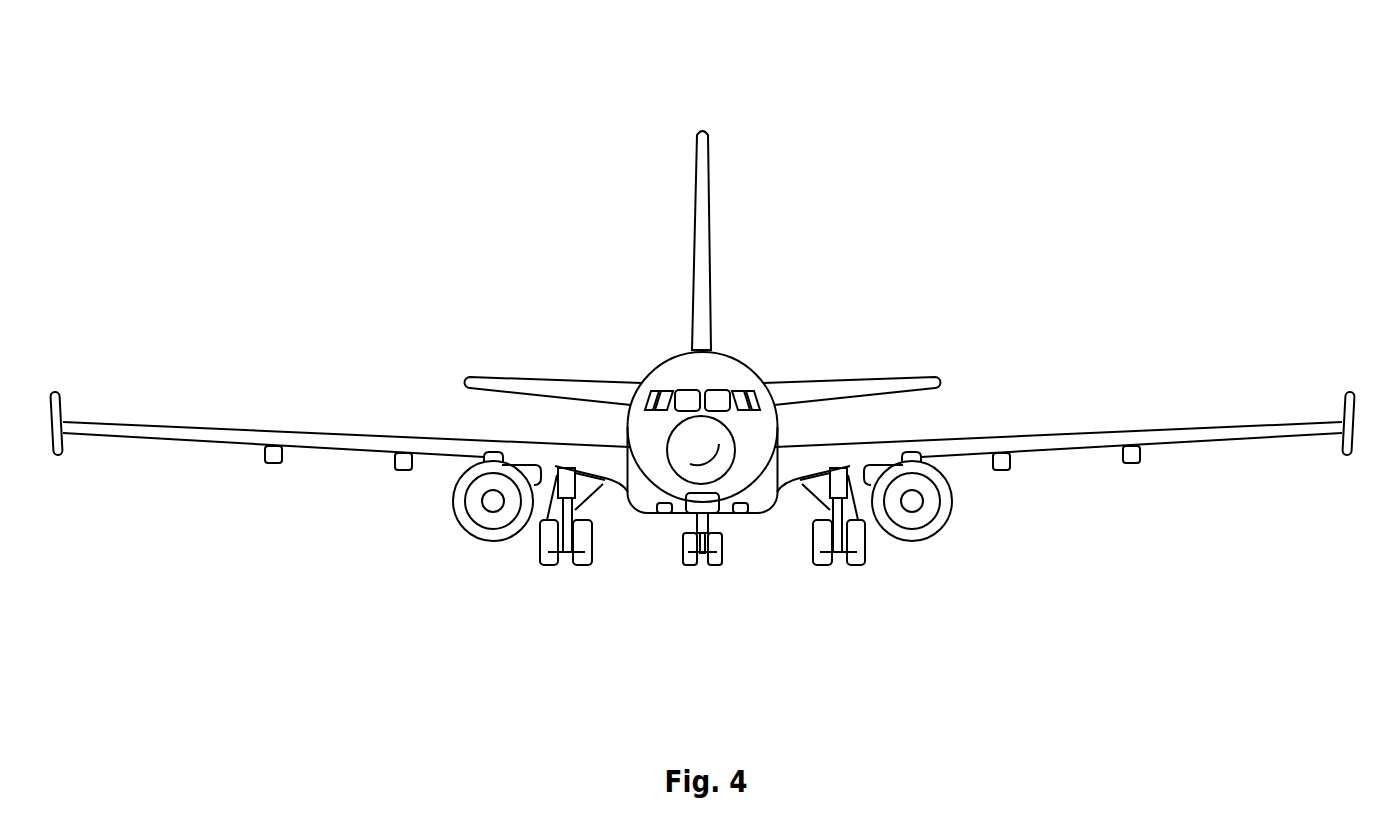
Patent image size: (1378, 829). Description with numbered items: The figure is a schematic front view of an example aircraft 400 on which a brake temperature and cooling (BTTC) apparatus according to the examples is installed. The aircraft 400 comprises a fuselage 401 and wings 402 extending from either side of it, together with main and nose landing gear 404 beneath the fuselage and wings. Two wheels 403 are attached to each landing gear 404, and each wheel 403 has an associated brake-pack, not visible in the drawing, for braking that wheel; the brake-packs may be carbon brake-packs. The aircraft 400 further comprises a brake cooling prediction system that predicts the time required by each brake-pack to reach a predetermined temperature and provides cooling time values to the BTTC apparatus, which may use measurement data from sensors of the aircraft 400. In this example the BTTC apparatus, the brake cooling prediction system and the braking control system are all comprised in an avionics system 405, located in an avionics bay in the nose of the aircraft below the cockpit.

The aircraft 400 is at (447, 109).
The fuselage 401 is at (730, 370).
The wings 402 is at (958, 443).
The wheels 403 is at (548, 550).
The main and nose landing gear 404 is at (593, 525).
The avionics system 405 is at (657, 387).